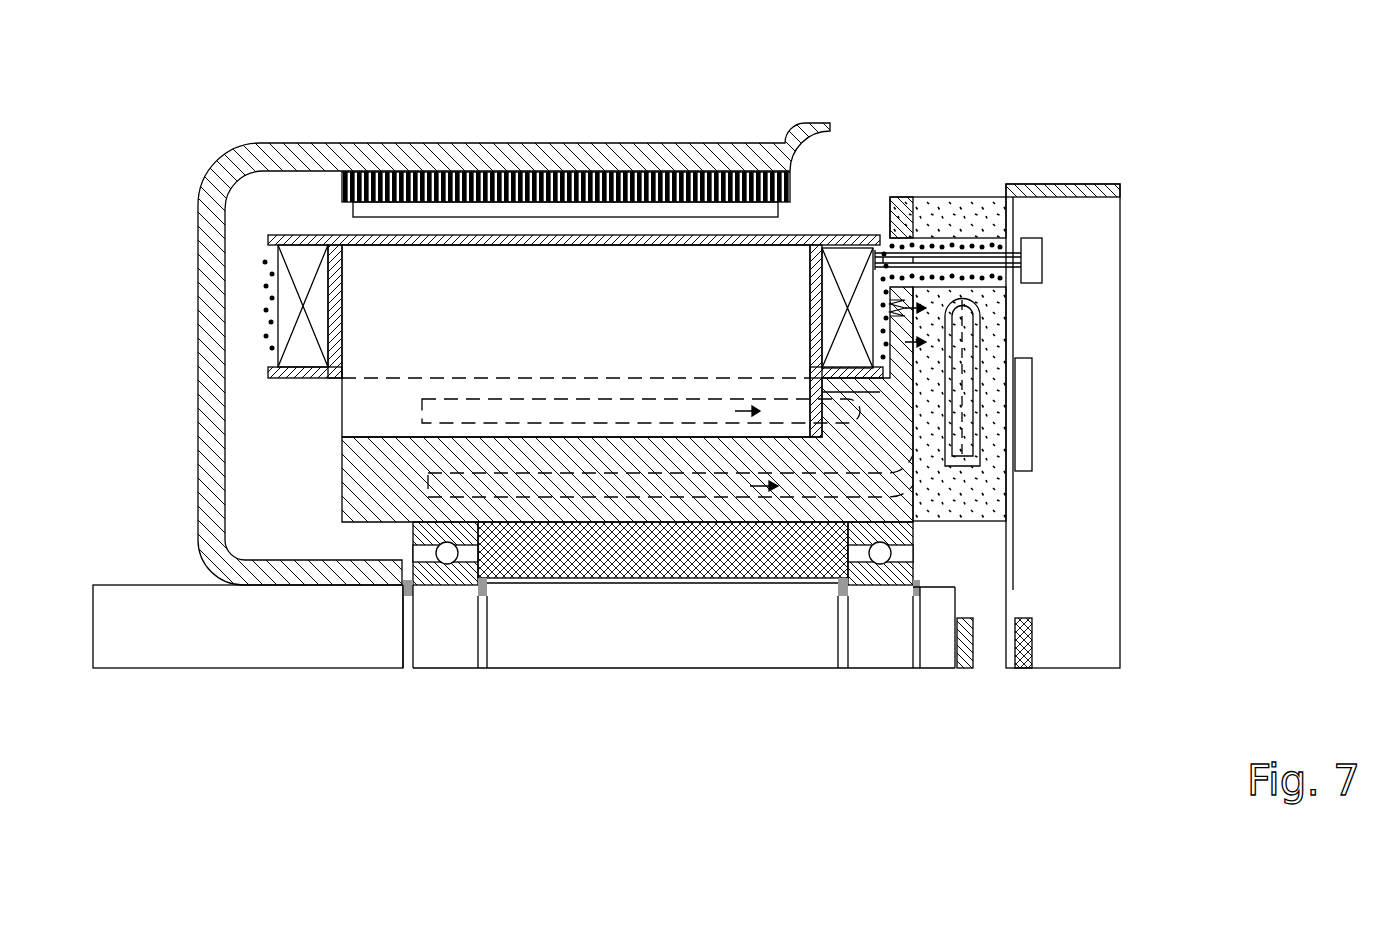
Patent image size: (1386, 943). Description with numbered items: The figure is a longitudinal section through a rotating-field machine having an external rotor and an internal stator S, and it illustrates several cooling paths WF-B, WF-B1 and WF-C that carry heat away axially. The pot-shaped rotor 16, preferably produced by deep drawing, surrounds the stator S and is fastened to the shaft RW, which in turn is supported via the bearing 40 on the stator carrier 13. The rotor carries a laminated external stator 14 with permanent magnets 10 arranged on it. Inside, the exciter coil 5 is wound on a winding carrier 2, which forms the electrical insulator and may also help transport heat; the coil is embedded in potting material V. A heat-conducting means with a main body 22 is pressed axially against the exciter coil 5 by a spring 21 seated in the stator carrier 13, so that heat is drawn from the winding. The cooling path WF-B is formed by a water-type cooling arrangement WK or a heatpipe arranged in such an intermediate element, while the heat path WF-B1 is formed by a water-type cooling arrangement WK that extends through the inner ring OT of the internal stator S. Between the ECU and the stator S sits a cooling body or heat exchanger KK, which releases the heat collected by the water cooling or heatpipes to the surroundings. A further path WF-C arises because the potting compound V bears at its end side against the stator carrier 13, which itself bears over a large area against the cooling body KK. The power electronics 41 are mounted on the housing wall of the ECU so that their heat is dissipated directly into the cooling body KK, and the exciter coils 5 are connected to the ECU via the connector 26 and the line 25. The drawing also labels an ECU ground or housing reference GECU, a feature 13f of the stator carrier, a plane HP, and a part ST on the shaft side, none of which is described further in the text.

The stator S is at (1022, 668).
The permanent magnets 10 is at (498, 210).
The laminated external stator 14 is at (648, 170).
The exciter coil 5 is at (298, 309).
The main body 22 is at (862, 300).
The potting material V is at (275, 290).
The line 25 is at (961, 262).
The connector 26 is at (1029, 263).
The ECU housing GECU is at (1050, 188).
The electrical lead bars 13f is at (973, 296).
The spring 21 is at (900, 318).
The cooling path WF-C is at (885, 343).
The water-type cooling arrangement WK is at (971, 395).
The power electronics 41 is at (1027, 432).
The cooling body KK is at (993, 497).
The pot-shaped rotor 16 is at (210, 400).
The winding carrier 2 is at (318, 376).
The bearing 40 is at (450, 580).
The main plane HP is at (508, 410).
The stator carrier 13 is at (580, 455).
The inner ring OT is at (758, 552).
The connector pin ST is at (962, 668).
The shaft RW is at (190, 645).
The element ECU is at (1105, 588).
The cooling path WF-B is at (601, 401).
The heat path WF-B1 is at (723, 498).